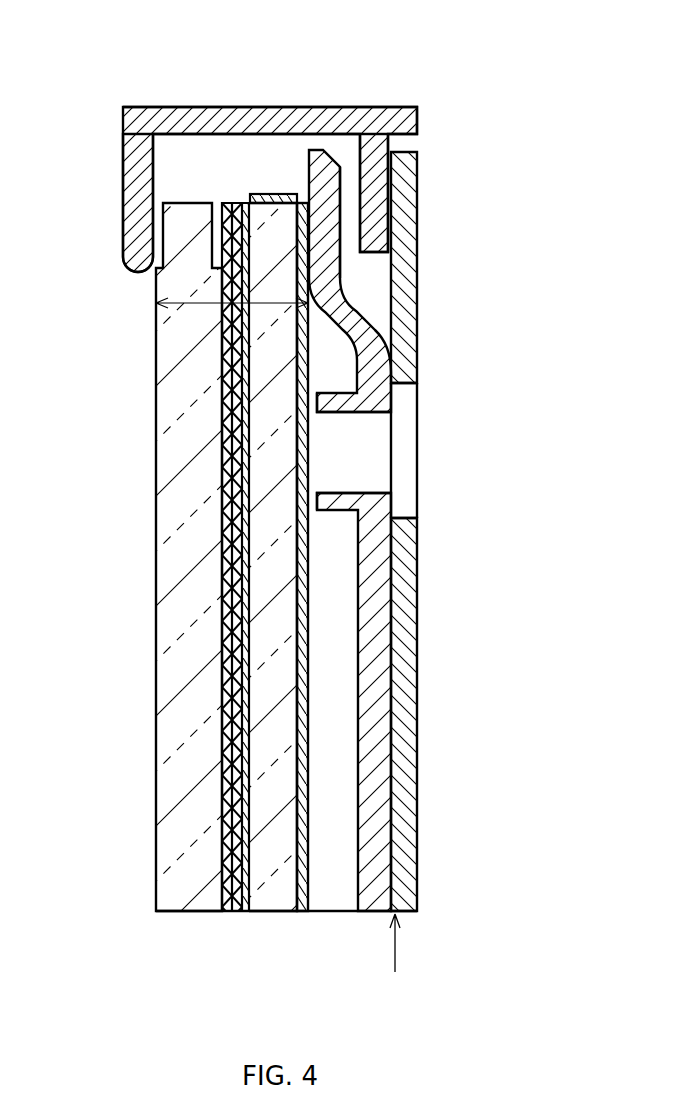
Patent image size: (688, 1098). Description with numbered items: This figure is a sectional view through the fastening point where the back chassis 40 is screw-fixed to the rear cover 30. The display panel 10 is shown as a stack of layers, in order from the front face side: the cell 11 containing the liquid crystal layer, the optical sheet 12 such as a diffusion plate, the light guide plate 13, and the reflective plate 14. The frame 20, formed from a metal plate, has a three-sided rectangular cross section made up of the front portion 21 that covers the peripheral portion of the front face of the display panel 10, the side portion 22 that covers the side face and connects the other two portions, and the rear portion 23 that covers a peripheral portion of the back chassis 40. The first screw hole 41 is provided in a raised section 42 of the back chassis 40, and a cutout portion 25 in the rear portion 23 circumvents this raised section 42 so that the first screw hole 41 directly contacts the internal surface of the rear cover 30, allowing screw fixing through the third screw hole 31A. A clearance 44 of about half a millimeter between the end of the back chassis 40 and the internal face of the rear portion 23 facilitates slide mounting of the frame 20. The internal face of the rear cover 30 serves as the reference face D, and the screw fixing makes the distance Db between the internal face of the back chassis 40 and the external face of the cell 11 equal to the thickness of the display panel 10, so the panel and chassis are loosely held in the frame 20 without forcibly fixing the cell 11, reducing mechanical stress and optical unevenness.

The display panel 10 is at (158, 976).
The cell 11 is at (177, 906).
The optical sheet 12 is at (223, 918).
The light guide plate 13 is at (275, 906).
The reflective plate 14 is at (300, 906).
The frame 20 is at (383, 47).
The front portion 21 is at (136, 150).
The side portion 22 is at (260, 118).
The rear portion 23 is at (369, 152).
The cutout portion 25 is at (375, 255).
The rear cover 30 is at (412, 612).
The third screw hole 31A is at (410, 514).
The back chassis 40 is at (378, 668).
The first screw hole 41 is at (355, 492).
The raised section 42 is at (372, 343).
The clearance 44 is at (352, 205).
The reference face D is at (394, 959).
The distance Db is at (176, 300).